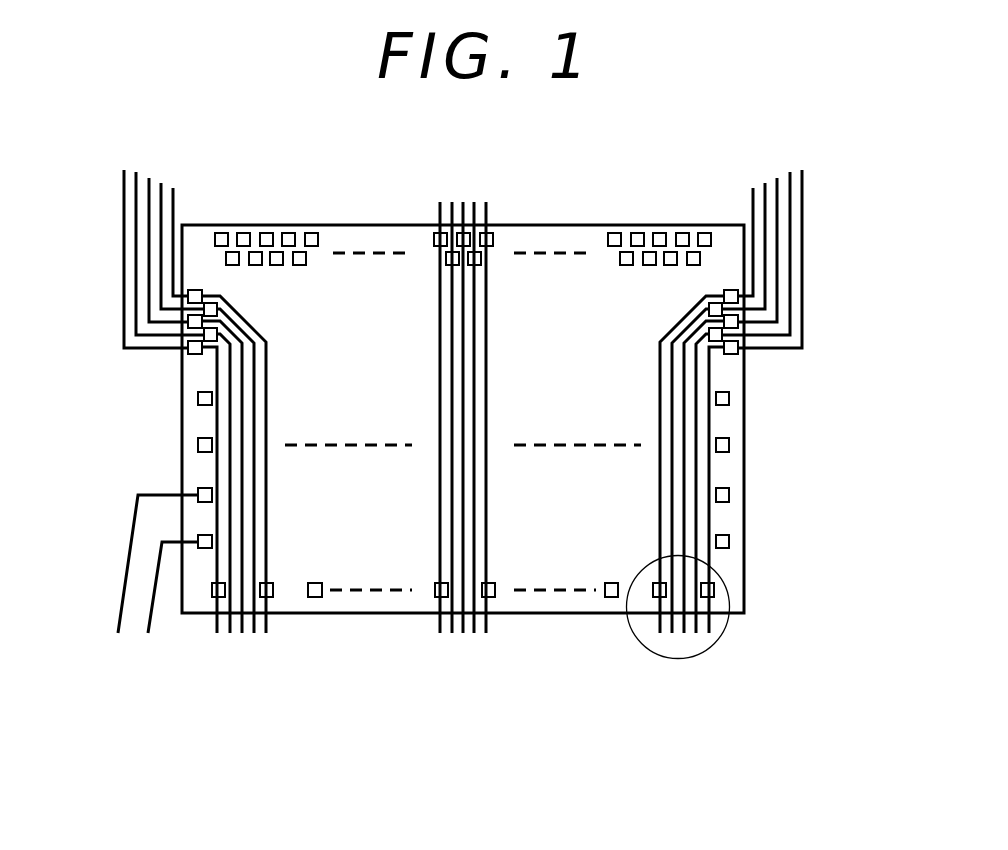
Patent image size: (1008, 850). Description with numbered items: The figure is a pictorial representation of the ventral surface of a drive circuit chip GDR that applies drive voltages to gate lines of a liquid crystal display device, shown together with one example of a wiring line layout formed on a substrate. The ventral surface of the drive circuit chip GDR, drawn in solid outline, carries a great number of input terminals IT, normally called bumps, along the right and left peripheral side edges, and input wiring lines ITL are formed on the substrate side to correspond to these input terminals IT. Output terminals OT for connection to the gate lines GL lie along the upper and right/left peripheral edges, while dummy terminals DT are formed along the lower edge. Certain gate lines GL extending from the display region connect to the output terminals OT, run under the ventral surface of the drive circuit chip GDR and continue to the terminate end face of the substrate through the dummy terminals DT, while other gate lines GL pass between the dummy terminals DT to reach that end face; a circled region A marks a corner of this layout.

The gate lines GL is at (124, 203).
The output terminals OT is at (222, 233).
The input terminals IT is at (198, 445).
The input wiring lines ITL is at (148, 588).
The dummy terminals DT is at (437, 599).
The drive circuit chip GDR is at (746, 570).
The region A is at (707, 650).